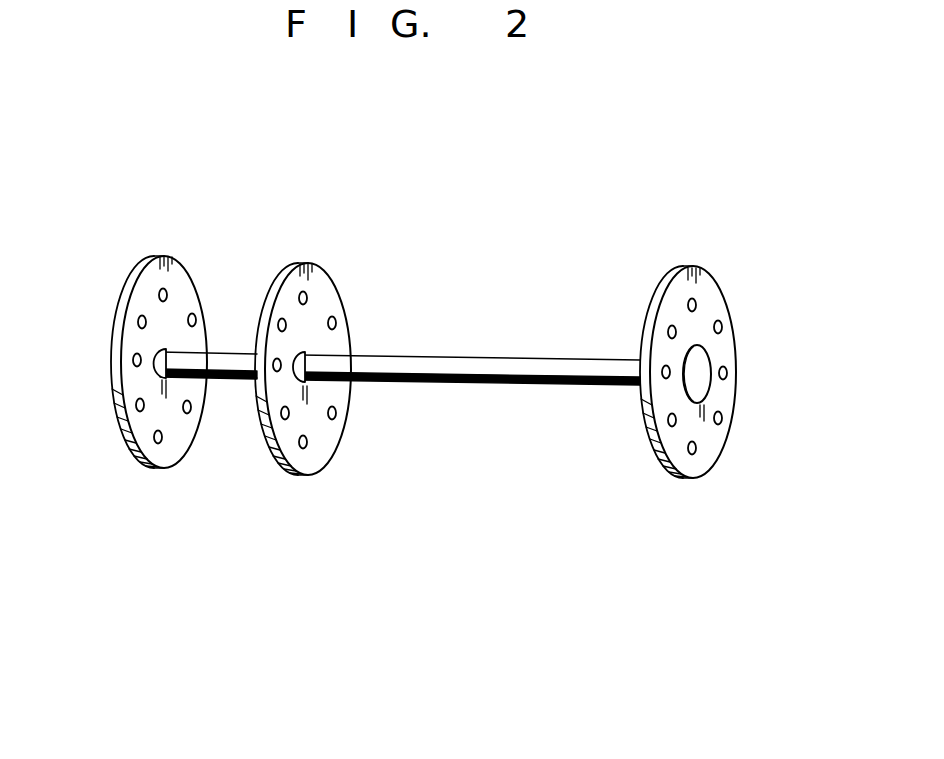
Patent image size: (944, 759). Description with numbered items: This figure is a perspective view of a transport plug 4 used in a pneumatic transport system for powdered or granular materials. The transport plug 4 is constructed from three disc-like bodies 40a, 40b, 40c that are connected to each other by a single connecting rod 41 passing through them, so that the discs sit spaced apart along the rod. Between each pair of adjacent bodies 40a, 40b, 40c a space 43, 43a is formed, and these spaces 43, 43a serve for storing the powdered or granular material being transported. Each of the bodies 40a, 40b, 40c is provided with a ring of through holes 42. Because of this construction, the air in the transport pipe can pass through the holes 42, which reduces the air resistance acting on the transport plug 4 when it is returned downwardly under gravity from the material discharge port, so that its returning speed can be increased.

The transport plug 4 is at (415, 370).
The disc-like body 40a is at (660, 275).
The disc-like body 40b is at (305, 263).
The disc-like body 40c is at (165, 256).
The connecting rod 41 is at (457, 386).
The through holes 42 is at (159, 300).
The space 43 is at (400, 370).
The space 43a is at (225, 438).